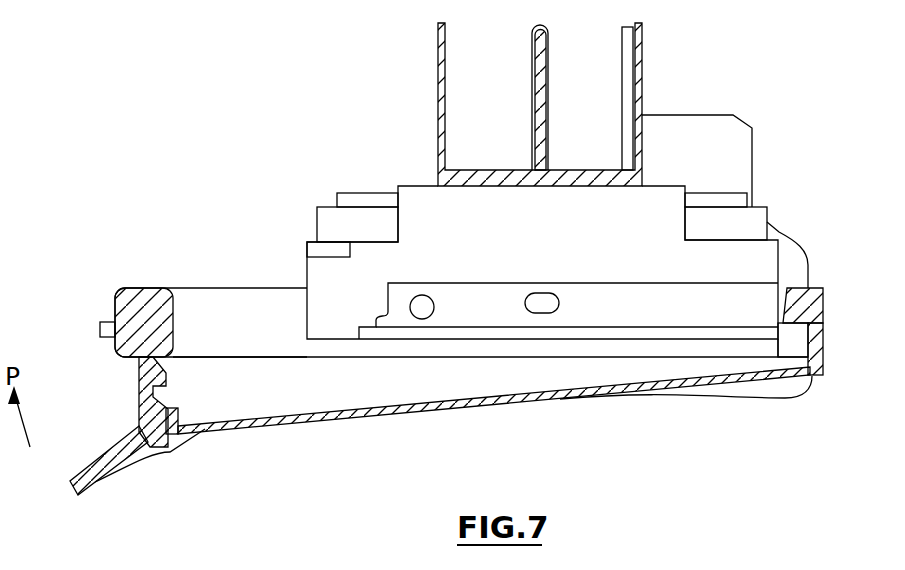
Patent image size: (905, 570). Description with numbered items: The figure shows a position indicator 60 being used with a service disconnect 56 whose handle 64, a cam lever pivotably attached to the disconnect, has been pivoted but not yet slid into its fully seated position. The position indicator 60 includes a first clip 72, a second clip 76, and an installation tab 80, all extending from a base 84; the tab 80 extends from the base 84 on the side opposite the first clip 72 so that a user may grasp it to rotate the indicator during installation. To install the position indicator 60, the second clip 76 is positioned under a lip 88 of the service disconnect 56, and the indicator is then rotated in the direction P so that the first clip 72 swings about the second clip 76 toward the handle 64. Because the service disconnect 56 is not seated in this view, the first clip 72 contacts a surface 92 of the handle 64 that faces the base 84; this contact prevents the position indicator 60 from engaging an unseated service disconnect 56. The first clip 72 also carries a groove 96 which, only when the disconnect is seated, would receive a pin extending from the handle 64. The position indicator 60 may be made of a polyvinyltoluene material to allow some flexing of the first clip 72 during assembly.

The service disconnect 56 is at (724, 157).
The handle 64 is at (195, 288).
The surface 92 is at (198, 357).
The lip 88 is at (795, 312).
The second clip 76 is at (815, 325).
The first clip 72 is at (138, 400).
The groove 96 is at (162, 403).
The installation tab 80 is at (98, 478).
The base 84 is at (290, 420).
The position indicator 60 is at (455, 405).